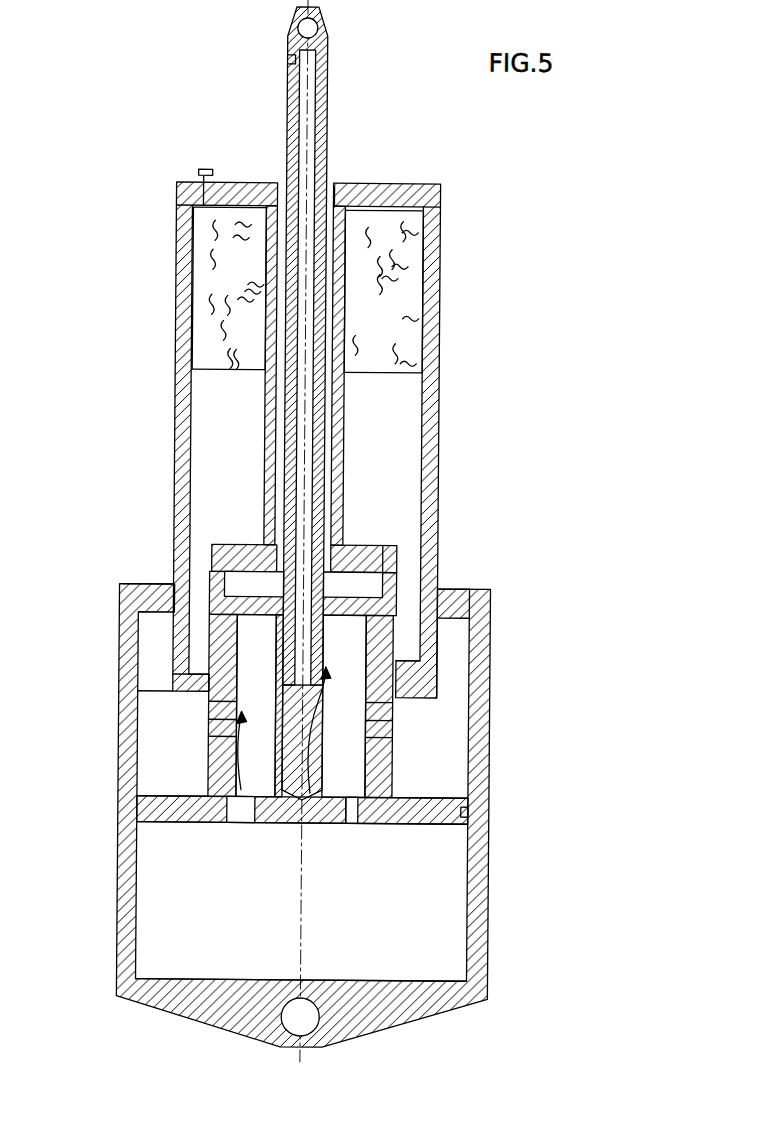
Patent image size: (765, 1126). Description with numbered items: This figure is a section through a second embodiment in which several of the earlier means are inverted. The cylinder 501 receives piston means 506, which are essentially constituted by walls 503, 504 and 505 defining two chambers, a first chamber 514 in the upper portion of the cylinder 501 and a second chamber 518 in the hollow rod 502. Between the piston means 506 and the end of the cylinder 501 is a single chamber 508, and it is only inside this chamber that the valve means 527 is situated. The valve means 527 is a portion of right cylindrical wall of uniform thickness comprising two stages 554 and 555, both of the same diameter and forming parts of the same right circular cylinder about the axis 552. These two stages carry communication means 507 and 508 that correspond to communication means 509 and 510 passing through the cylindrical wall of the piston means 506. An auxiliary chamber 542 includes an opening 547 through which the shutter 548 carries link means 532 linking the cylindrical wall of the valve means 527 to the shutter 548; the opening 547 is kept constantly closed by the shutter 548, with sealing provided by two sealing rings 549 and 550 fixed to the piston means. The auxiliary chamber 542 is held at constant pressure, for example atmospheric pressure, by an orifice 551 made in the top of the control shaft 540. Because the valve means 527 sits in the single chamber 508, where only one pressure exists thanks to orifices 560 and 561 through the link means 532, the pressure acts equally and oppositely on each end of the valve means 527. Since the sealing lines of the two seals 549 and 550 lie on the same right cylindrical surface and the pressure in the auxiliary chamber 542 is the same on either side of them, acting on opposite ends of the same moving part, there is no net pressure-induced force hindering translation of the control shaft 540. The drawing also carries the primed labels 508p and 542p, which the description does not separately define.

The cylinder 501 is at (487, 920).
The hollow rod 502 is at (174, 290).
The wall 503 is at (210, 708).
The wall 504 is at (378, 557).
The wall 505 is at (152, 803).
The piston means 506 is at (455, 797).
The communication means 507 is at (368, 631).
The chamber 508 is at (384, 923).
The passage 508p is at (422, 848).
The communication means 509 is at (430, 708).
The communication means 510 is at (372, 735).
The chamber 514 is at (194, 758).
The chamber 518 is at (247, 428).
The valve means 527 is at (230, 795).
The link means 532 is at (228, 623).
The control shaft 540 is at (325, 107).
The auxiliary chamber 542 is at (330, 202).
The passage 542p is at (300, 793).
The opening 547 is at (255, 572).
The shutter 548 is at (290, 645).
The sealing ring 549 is at (347, 547).
The sealing ring 550 is at (303, 797).
The orifice 551 is at (281, 193).
The axis 552 is at (301, 953).
The stage 554 is at (173, 576).
The stage 555 is at (228, 760).
The orifice 560 is at (360, 590).
The orifice 561 is at (368, 823).